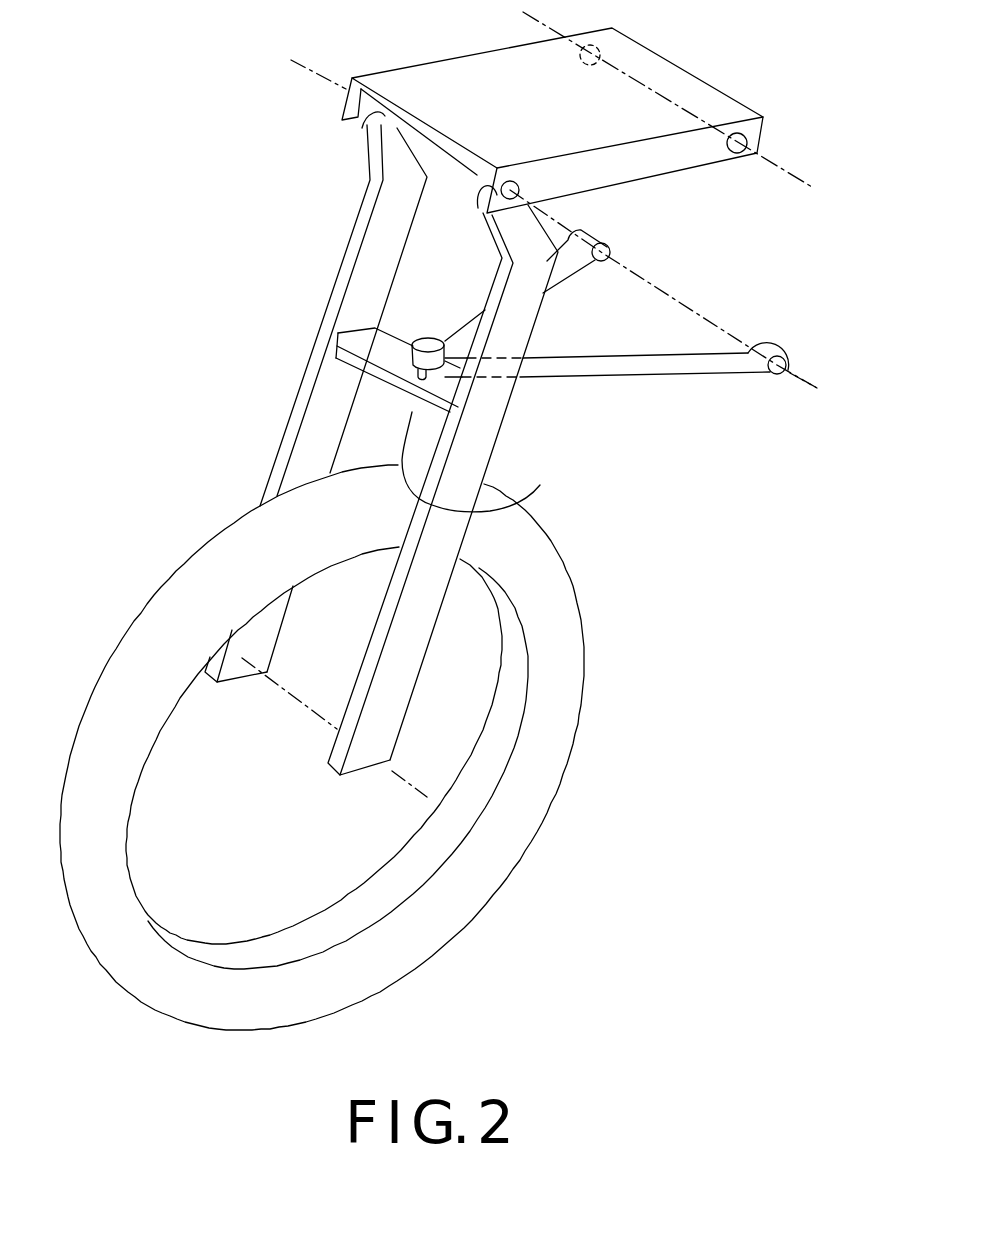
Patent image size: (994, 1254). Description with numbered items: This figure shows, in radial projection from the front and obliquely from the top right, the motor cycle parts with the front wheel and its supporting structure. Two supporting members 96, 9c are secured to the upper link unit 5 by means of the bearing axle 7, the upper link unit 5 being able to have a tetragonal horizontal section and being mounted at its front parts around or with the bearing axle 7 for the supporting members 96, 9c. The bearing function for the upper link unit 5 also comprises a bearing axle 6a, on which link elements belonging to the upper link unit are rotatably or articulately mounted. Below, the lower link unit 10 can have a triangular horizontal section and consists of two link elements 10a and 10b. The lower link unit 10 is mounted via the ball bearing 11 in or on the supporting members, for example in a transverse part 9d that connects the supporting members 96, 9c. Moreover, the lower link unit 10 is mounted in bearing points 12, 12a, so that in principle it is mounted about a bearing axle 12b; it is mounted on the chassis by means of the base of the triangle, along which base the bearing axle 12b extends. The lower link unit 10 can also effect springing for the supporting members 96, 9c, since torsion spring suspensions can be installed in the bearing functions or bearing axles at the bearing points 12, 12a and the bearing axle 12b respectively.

The upper link unit 5 is at (252, 59).
The bearing axle 7 is at (352, 78).
The bearing axle 6a is at (788, 170).
The supporting member 96 is at (323, 312).
The supporting member 9c is at (507, 407).
The transverse part 9d is at (468, 514).
The ball bearing 11 is at (413, 370).
The lower link unit 10 is at (645, 318).
The link element 10a is at (562, 281).
The link element 10b is at (697, 376).
The bearing point 12 is at (772, 351).
The bearing point 12a is at (612, 245).
The bearing axle 12b is at (792, 388).